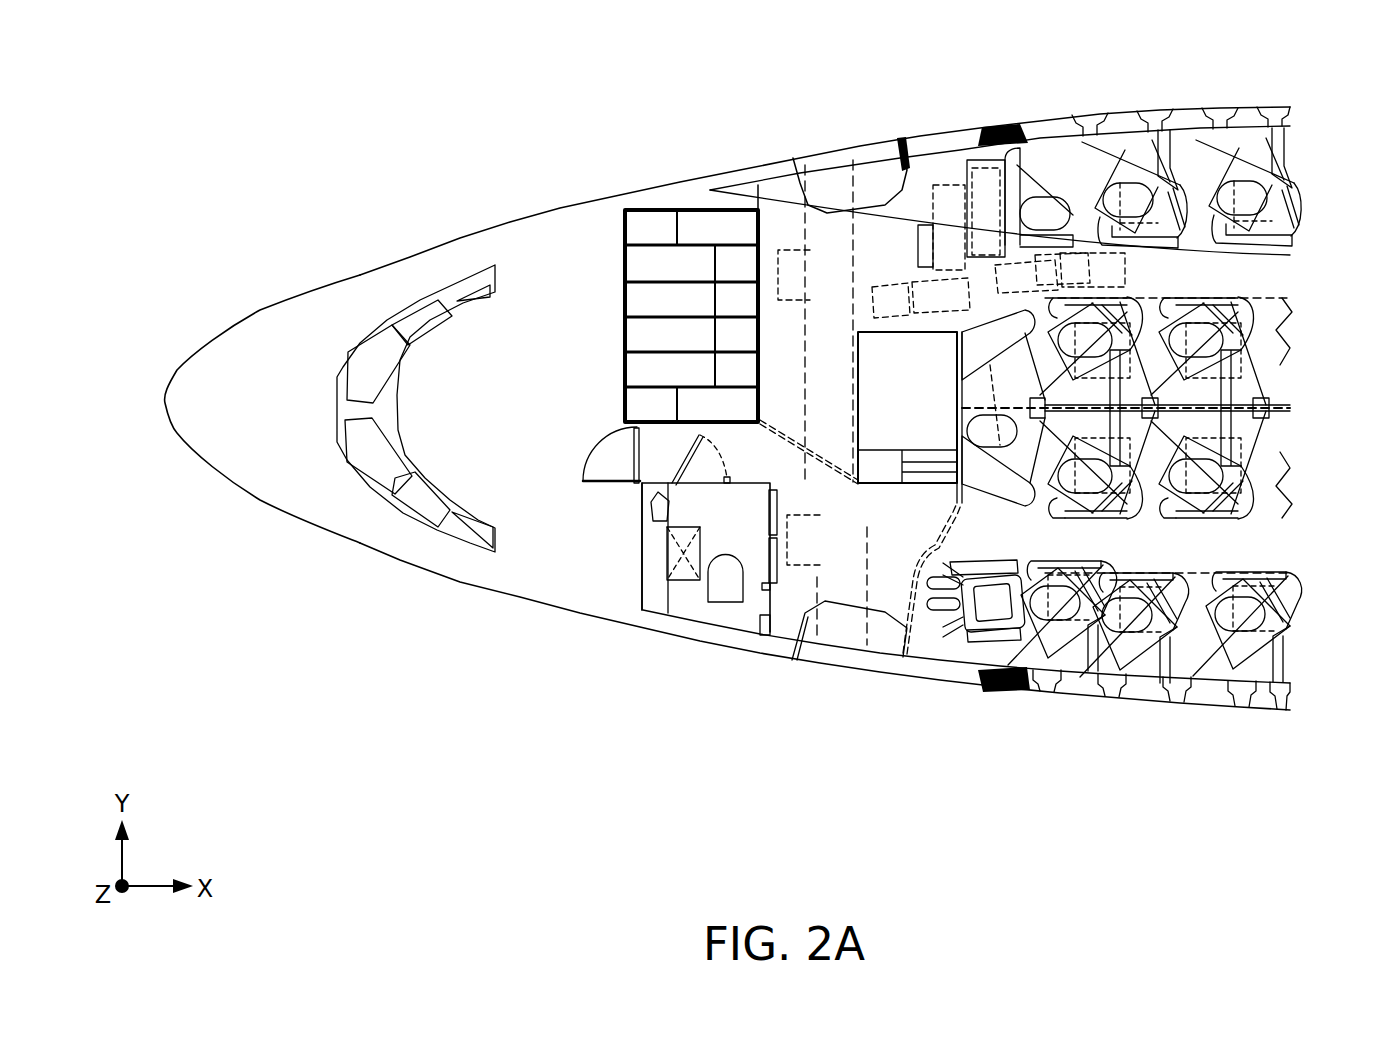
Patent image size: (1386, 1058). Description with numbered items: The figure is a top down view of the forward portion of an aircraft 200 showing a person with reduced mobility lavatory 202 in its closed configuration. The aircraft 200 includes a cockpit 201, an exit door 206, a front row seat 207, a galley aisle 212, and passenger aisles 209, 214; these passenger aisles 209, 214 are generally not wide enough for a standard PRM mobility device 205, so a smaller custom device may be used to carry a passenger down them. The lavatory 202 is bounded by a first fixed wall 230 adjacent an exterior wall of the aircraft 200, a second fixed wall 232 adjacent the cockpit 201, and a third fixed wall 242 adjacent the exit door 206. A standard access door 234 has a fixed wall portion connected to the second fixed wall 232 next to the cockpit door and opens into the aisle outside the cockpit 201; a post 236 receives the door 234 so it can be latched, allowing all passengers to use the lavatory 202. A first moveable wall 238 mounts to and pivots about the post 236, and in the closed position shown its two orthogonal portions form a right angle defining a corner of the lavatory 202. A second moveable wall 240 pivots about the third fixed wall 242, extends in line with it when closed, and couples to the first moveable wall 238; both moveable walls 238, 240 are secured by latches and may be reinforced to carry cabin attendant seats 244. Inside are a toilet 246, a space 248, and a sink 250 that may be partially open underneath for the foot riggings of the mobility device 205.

The aircraft 200 is at (287, 160).
The cockpit 201 is at (466, 358).
The PRM lavatory 202 is at (630, 612).
The PRM mobility device 205 is at (987, 617).
The exit door 206 is at (850, 677).
The front row seat 207 is at (1125, 665).
The passenger aisle 209 is at (1252, 549).
The galley aisle 212 is at (840, 376).
The passenger aisle 214 is at (1250, 272).
The first fixed wall 230 is at (733, 630).
The second fixed wall 232 is at (643, 498).
The standard access door 234 is at (680, 460).
The post 236 is at (730, 480).
The first moveable wall 238 is at (757, 483).
The second moveable wall 240 is at (778, 570).
The third fixed wall 242 is at (770, 615).
The cabin attendant seats 244 is at (778, 558).
The toilet 246 is at (717, 600).
The space 248 is at (668, 537).
The sink 250 is at (652, 513).